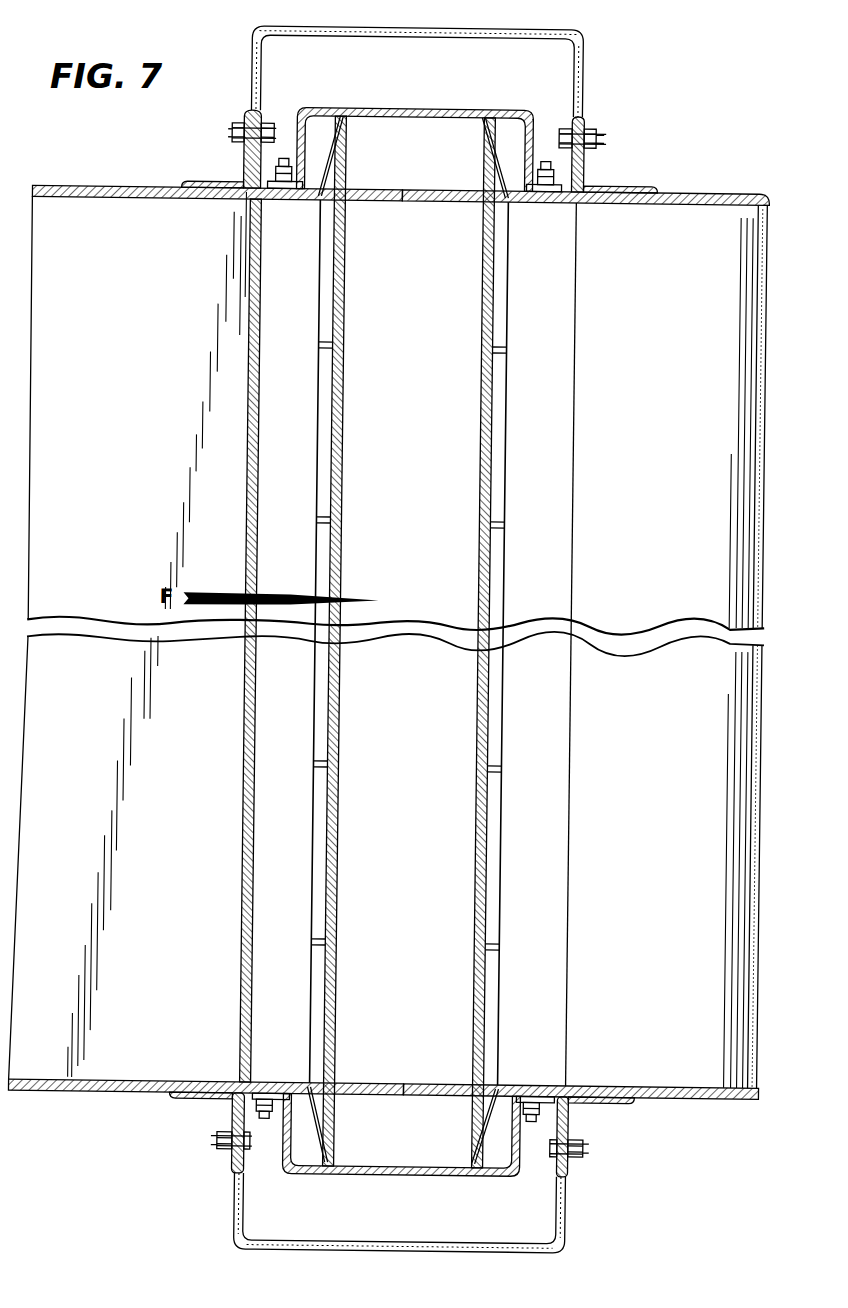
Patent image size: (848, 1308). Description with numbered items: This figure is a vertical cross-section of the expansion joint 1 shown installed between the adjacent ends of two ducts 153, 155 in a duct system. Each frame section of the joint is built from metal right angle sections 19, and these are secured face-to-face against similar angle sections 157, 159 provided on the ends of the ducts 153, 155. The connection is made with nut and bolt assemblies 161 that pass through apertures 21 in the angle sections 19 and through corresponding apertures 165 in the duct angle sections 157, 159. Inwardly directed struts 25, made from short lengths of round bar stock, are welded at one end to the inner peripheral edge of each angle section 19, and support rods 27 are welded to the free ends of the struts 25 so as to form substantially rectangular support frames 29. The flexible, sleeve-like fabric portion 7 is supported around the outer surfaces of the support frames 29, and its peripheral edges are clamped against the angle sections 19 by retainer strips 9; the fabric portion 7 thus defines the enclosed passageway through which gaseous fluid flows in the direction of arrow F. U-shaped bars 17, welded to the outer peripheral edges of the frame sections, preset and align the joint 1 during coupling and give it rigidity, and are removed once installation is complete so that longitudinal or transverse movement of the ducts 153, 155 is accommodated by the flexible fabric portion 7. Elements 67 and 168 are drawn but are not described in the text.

The expansion joint 1 is at (611, 63).
The fabric portion 7 is at (426, 113).
The first retainer strips 9 is at (280, 170).
The U-shaped bars 17 is at (405, 30).
The right angle sections 19 is at (254, 120).
The apertures 21 is at (268, 134).
The struts 25 is at (327, 148).
The support rods 27 is at (341, 152).
The support frames 29 is at (462, 172).
The outer nut 67 is at (599, 643).
The duct 153 is at (106, 188).
The duct 155 is at (708, 176).
The angle section 157 is at (240, 162).
The angle section 159 is at (580, 176).
The nut and bolt assemblies 161 is at (244, 118).
The apertures 165 is at (226, 134).
The stiffener plate 168 is at (266, 207).